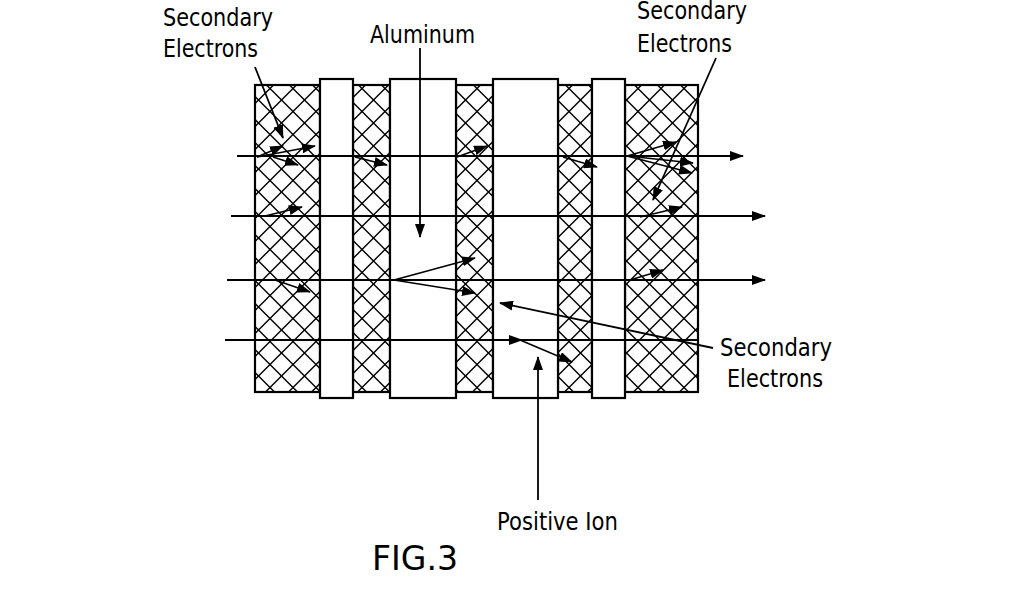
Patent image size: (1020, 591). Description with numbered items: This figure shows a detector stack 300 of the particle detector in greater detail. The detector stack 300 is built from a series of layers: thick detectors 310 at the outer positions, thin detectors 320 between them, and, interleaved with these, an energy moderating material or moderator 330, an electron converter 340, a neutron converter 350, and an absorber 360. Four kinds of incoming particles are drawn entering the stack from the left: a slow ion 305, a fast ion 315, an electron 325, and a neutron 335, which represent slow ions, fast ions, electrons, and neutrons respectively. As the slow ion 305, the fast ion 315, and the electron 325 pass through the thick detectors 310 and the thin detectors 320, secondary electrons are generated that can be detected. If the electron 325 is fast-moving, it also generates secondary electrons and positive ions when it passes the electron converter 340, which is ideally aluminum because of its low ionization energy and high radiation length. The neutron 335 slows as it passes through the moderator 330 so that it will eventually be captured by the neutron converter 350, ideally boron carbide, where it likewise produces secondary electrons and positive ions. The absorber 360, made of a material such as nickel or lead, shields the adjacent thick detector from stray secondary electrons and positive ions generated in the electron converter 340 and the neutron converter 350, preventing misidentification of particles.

The detector stack 300 is at (716, 302).
The slow ion 305 is at (127, 153).
The fast ion 315 is at (127, 214).
The electron 325 is at (127, 280).
The neutron 335 is at (127, 340).
The thick detector 310 is at (272, 393).
The thin detector 320 is at (375, 393).
The moderator 330 is at (337, 399).
The electron converter 340 is at (420, 399).
The neutron converter 350 is at (505, 399).
The absorber 360 is at (610, 399).